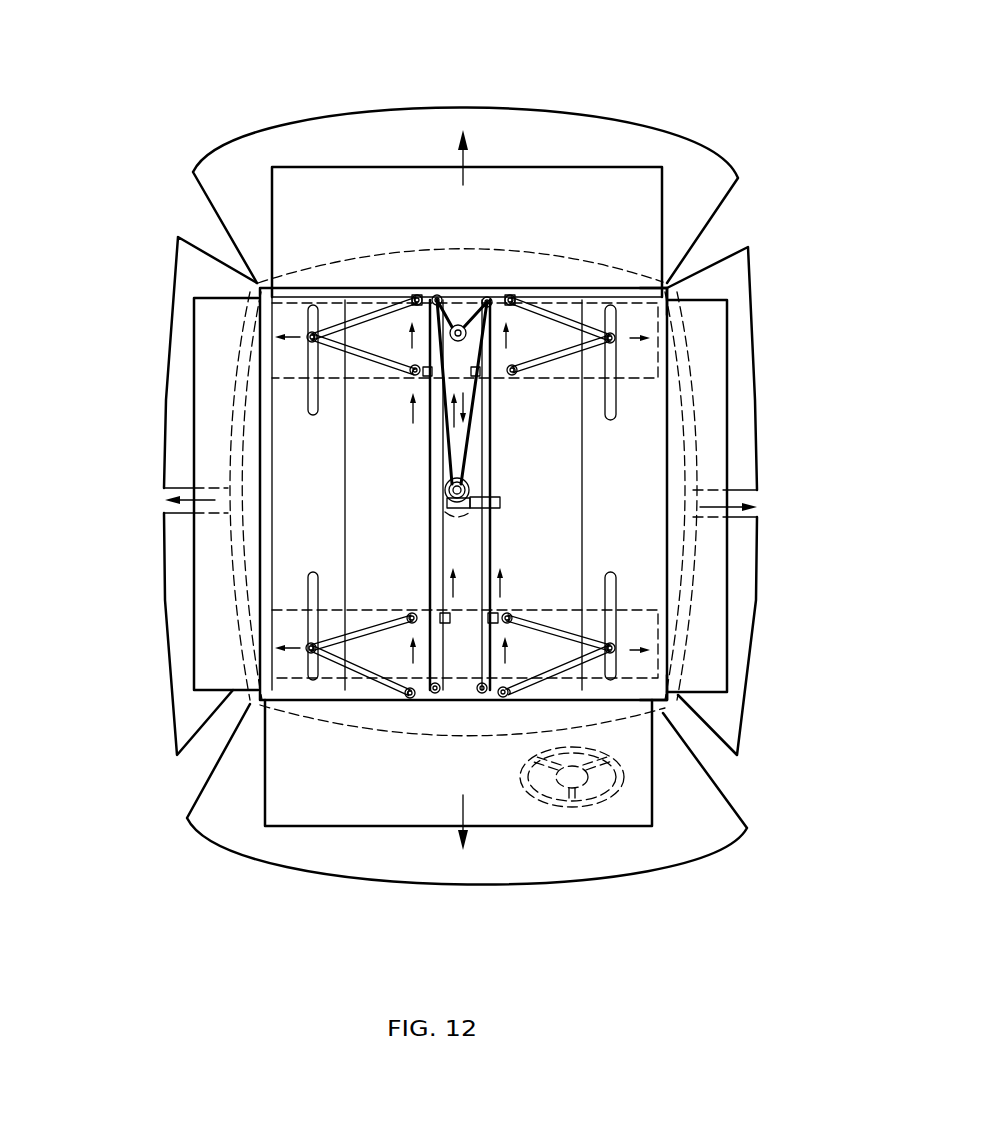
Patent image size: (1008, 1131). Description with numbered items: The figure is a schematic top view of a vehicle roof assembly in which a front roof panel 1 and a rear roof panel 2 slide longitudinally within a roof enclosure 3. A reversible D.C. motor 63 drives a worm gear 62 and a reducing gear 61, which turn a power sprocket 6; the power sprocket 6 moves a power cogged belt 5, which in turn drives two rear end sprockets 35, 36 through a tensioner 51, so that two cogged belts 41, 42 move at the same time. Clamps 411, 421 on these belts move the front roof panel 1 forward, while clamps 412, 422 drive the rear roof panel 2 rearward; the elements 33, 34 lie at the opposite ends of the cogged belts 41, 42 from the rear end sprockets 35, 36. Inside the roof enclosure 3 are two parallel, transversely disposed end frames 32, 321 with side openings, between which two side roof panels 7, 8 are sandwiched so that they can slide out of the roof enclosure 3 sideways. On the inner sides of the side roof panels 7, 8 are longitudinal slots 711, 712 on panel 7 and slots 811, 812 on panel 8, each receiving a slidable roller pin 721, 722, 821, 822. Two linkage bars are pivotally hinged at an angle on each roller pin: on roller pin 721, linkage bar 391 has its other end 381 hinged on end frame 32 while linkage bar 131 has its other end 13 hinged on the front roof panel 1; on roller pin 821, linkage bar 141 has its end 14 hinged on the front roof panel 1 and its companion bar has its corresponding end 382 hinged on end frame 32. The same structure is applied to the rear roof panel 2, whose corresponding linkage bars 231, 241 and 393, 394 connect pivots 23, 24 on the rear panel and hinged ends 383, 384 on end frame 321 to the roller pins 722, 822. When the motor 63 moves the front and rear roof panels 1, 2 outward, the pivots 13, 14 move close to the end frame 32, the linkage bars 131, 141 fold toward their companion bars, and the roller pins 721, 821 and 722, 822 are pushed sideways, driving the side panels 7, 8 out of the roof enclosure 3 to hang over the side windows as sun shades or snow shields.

The front roof panel 1 is at (452, 810).
The rear roof panel 2 is at (398, 188).
The roof enclosure 3 is at (258, 527).
The power cogged belt 5 is at (477, 458).
The power sprocket 6 is at (472, 500).
The side roof panel 7 is at (194, 415).
The side roof panel 8 is at (727, 367).
The pivot 13 is at (412, 613).
The pivot 14 is at (507, 613).
The pivot pin 23 is at (415, 378).
The pivot pin 24 is at (513, 378).
The end frame 32 is at (667, 700).
The rail lower end 33 is at (435, 694).
The rail lower end 34 is at (482, 694).
The rear end sprocket 35 is at (437, 295).
The rear end sprocket 36 is at (487, 297).
The cogged belt 41 is at (427, 527).
The cogged belt 42 is at (487, 547).
The tensioner 51 is at (458, 325).
The reducing gear 61 is at (468, 488).
The worm gear 62 is at (447, 497).
The reversible D.C. motor 63 is at (498, 507).
The linkage bar 131 is at (367, 633).
The linkage bar 141 is at (558, 634).
The link 231 is at (378, 358).
The link 241 is at (548, 358).
The end frame 321 is at (666, 282).
The linkage bar end 381 is at (410, 698).
The pivot 382 is at (505, 698).
The pivot 383 is at (413, 295).
The pivot 384 is at (513, 300).
The linkage bar 391 is at (350, 667).
The link 393 is at (360, 306).
The link 394 is at (553, 312).
The clamp 411 is at (445, 620).
The clamp 412 is at (412, 296).
The clamp 421 is at (493, 620).
The clamp 422 is at (511, 297).
The longitudinal slot 711 is at (308, 578).
The longitudinal slot 712 is at (313, 355).
The roller pin 721 is at (305, 648).
The roller pin 722 is at (302, 307).
The slot 811 is at (612, 580).
The longitudinal slot 812 is at (612, 363).
The roller pin 821 is at (563, 669).
The roller pin 822 is at (610, 338).